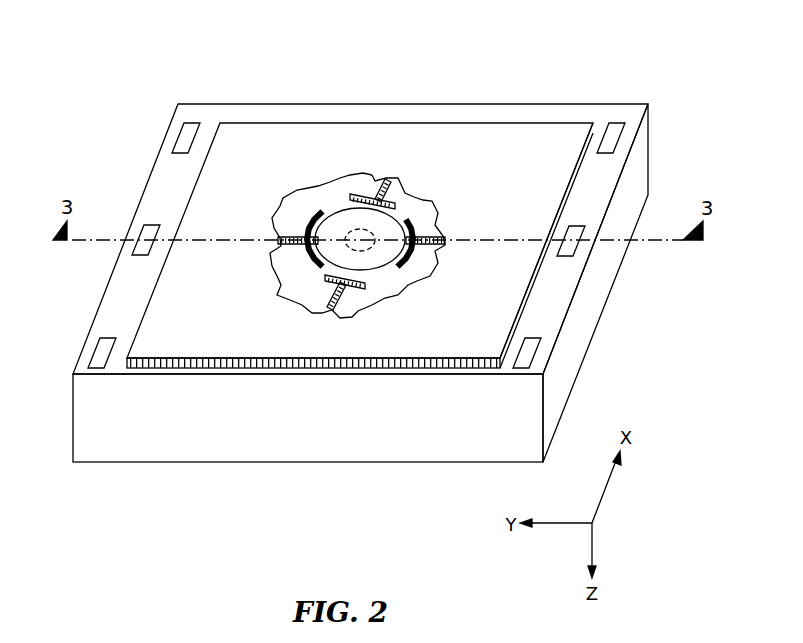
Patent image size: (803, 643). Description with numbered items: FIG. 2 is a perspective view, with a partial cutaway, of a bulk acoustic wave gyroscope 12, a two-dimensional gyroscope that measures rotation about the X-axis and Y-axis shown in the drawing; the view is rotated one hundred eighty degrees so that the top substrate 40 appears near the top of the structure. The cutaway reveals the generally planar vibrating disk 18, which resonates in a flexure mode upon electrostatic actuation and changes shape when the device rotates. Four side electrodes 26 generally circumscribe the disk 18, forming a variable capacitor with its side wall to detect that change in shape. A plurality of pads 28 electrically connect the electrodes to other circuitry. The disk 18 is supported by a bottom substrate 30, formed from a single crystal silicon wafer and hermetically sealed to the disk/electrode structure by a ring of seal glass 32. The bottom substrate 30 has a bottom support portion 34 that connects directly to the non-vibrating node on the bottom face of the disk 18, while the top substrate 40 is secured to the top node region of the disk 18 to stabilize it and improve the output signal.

The bulk acoustic wave gyroscope 12 is at (185, 42).
The disk 18 is at (398, 212).
The side electrodes 26 is at (413, 224).
The pads 28 is at (150, 238).
The bottom substrate 30 is at (178, 337).
The seal glass 32 is at (435, 363).
The bottom support portion 34 is at (347, 236).
The top substrate 40 is at (112, 445).